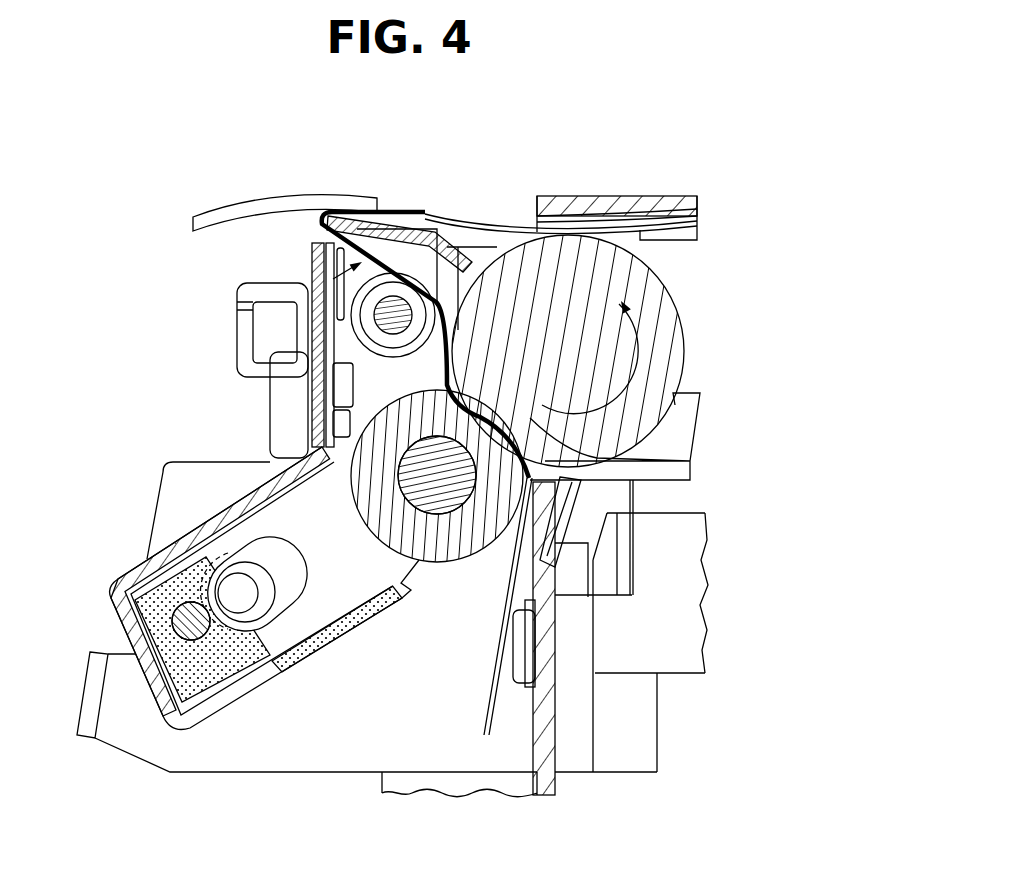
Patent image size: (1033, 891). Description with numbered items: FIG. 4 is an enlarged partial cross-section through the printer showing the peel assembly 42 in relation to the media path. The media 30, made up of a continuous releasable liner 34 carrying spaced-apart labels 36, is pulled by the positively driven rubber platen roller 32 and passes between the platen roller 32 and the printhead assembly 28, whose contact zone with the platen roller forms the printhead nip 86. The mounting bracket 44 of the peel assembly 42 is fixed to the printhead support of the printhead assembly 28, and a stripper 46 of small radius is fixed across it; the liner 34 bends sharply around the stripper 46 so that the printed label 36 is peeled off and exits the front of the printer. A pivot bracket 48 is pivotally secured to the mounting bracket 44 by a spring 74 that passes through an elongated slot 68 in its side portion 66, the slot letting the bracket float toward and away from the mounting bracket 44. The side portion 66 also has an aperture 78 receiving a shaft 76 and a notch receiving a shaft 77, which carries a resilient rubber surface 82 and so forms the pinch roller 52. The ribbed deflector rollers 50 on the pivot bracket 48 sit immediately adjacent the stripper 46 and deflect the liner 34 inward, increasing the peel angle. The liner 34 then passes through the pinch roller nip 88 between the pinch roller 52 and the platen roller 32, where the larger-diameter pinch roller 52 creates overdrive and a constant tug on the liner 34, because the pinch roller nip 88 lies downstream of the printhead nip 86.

The printhead assembly 28 is at (670, 200).
The media 30 is at (482, 208).
The platen roller 32 is at (636, 275).
The releasable liner 34 is at (490, 707).
The labels 36 is at (264, 202).
The peel assembly 42 is at (158, 303).
The mounting bracket 44 is at (330, 752).
The stripper 46 is at (323, 229).
The pivot bracket 48 is at (98, 583).
The ribbed deflector rollers 50 is at (367, 318).
The pinch roller 52 is at (368, 500).
The side portion 66 is at (312, 526).
The elongated slot 68 is at (300, 610).
The spring 74 is at (212, 547).
The shaft 76 is at (400, 300).
The shaft 77 is at (445, 492).
The aperture 78 is at (378, 357).
The resilient or rubber surface 82 is at (400, 533).
The printhead nip 86 is at (564, 218).
The pinch roller nip 88 is at (702, 461).